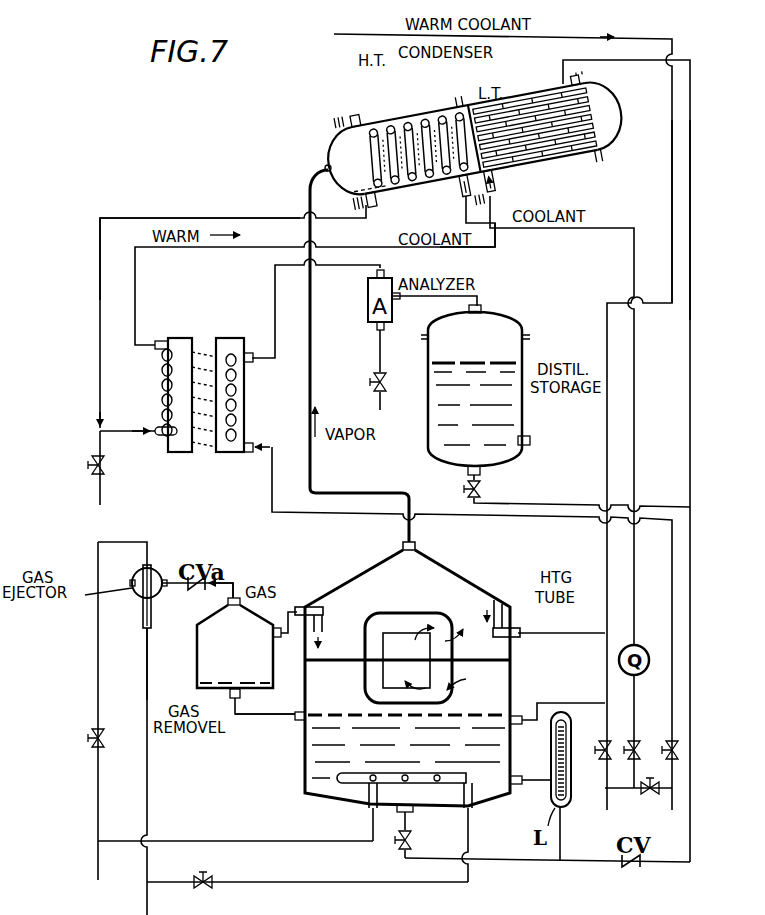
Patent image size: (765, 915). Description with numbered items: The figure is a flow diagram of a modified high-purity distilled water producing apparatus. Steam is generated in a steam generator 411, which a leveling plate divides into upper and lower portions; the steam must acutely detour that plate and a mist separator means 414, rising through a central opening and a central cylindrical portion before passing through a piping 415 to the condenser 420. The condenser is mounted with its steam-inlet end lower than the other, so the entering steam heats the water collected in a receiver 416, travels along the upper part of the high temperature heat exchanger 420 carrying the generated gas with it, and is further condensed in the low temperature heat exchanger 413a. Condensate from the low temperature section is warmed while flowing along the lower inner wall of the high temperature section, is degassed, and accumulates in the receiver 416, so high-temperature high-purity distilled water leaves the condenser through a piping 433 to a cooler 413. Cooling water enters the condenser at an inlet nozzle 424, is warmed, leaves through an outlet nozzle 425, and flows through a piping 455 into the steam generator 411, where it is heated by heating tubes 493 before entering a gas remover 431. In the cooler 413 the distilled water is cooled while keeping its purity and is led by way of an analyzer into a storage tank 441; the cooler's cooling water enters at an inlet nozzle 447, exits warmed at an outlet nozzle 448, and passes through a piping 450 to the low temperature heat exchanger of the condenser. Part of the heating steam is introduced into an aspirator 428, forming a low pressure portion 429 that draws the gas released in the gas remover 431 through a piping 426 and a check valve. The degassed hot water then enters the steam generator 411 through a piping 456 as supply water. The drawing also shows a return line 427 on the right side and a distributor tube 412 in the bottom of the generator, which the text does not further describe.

The condenser (high temperature heat exchanger) 420 is at (416, 118).
The outlet nozzle 425 is at (358, 121).
The low temperature heat exchanger 413a is at (508, 104).
The receiver 416 is at (372, 202).
The inlet nozzle 424 is at (464, 192).
The piping 455 is at (668, 156).
The coolant return line 427 is at (693, 157).
The piping 433 is at (172, 216).
The piping 450 is at (477, 249).
The piping 415 is at (356, 492).
The cooler 413 is at (231, 333).
The outlet nozzle 448 is at (158, 340).
The inlet nozzle 447 is at (246, 443).
The storage tank 441 is at (488, 357).
The low pressure portion 429 is at (152, 568).
The aspirator 428 is at (150, 618).
The piping 426 is at (236, 583).
The gas remover 431 is at (250, 666).
The piping 456 is at (240, 718).
The steam generator 411 is at (506, 689).
The mist separator means 414 is at (395, 632).
The heating tubes 493 is at (320, 606).
The distributor tube 412 is at (352, 780).